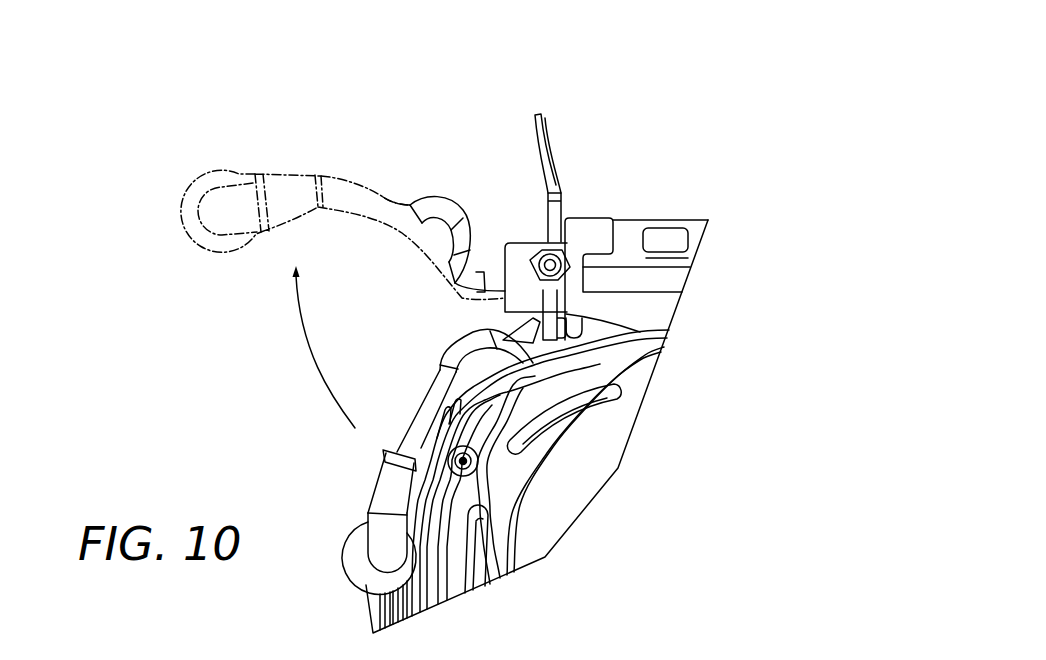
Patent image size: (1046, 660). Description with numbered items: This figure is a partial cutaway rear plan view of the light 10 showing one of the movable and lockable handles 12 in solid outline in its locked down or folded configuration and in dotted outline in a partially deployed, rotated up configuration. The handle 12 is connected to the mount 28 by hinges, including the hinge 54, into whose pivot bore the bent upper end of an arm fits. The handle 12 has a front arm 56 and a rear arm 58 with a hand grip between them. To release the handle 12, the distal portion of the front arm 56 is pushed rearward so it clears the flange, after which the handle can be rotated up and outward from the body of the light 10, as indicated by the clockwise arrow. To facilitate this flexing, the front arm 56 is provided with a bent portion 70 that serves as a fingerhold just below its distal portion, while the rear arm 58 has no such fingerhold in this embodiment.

The light 10 is at (636, 494).
The handle 12 is at (357, 312).
The mount 28 is at (595, 232).
The hinge 54 is at (547, 266).
The front arm 56 is at (428, 200).
The rear arm 58 is at (377, 210).
The bent portion 70 is at (457, 212).